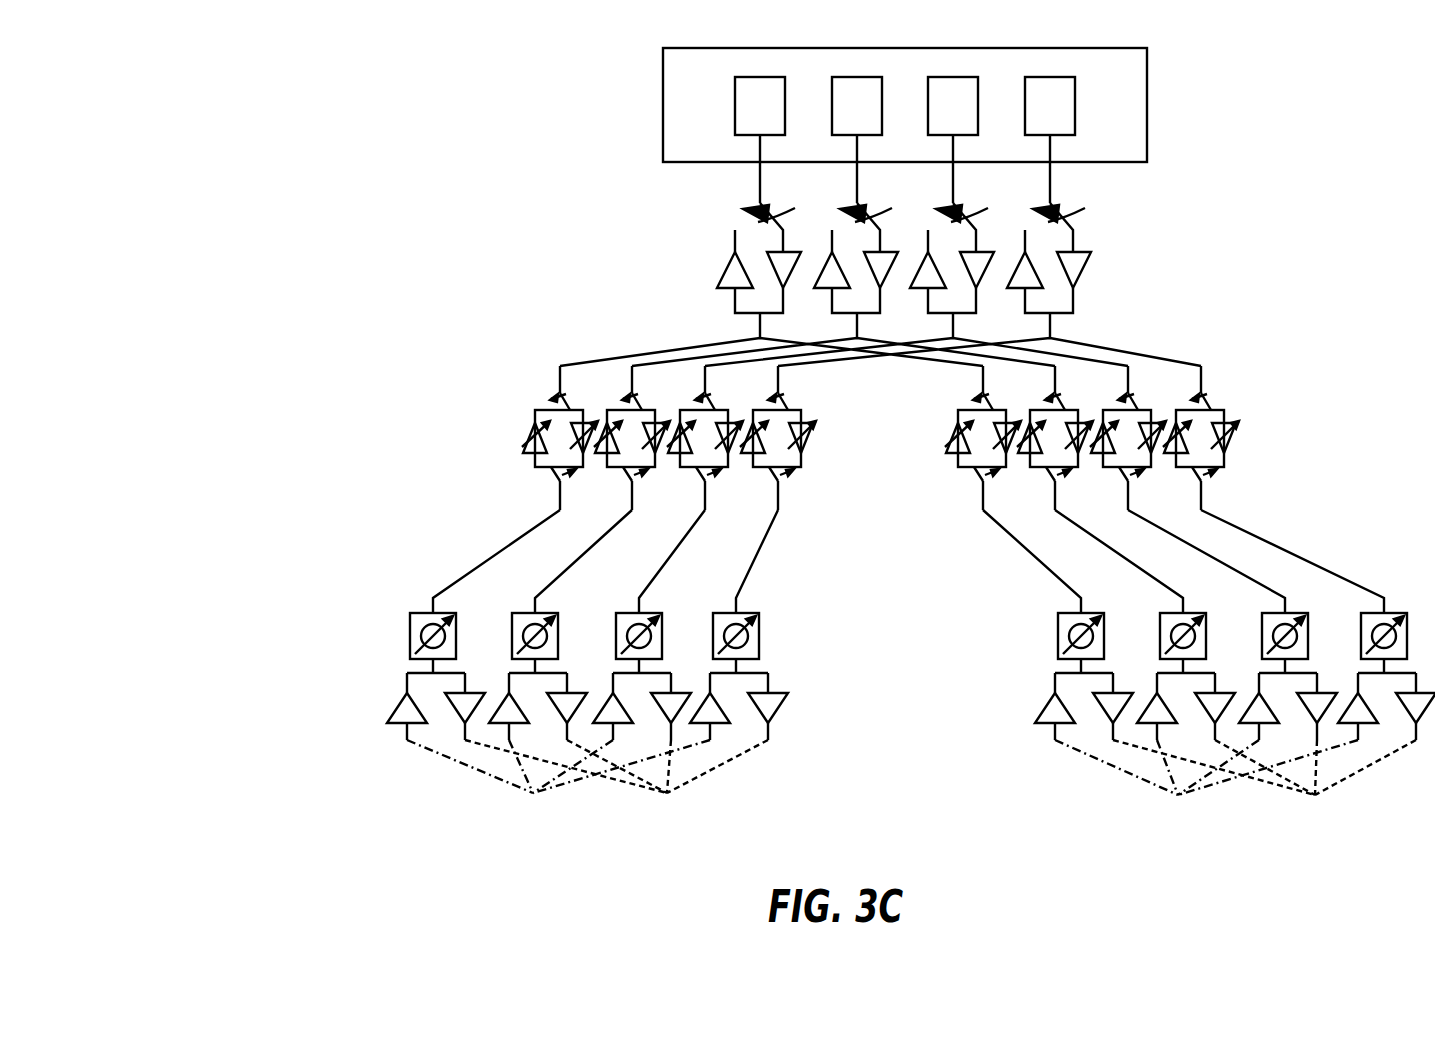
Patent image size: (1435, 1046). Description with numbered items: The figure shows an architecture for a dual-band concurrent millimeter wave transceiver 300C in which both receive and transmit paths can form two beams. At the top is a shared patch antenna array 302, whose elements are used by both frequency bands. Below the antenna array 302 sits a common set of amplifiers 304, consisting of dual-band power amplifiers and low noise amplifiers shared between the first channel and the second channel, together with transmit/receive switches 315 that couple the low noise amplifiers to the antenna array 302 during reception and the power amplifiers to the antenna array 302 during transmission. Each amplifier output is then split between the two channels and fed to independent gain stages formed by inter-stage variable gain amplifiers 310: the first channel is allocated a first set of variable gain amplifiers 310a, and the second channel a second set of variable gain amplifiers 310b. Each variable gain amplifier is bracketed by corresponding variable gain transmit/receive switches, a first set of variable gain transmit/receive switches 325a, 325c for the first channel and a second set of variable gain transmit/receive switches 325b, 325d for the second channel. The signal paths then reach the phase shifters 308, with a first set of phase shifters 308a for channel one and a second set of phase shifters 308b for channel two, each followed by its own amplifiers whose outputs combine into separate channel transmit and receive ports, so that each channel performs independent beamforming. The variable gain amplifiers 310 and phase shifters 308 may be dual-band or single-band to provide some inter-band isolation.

The dual-band concurrent millimeter wave transceiver 300C is at (564, 85).
The antenna array 302 is at (360, 162).
The common set of amplifiers 304 is at (651, 255).
The transmit/receive switches 315 is at (1102, 193).
The variable gain amplifiers 310 is at (717, 420).
The first set of variable gain amplifiers 310a is at (669, 438).
The second set of variable gain amplifiers 310b is at (1094, 438).
The first set of variable gain transmit/receive switches 325a is at (818, 382).
The second set of variable gain transmit/receive switches 325b is at (1248, 382).
The first set of variable gain transmit/receive switches 325c is at (818, 458).
The second set of variable gain transmit/receive switches 325d is at (1248, 458).
The phase shifters 308 is at (779, 681).
The first set of phase shifters 308a is at (780, 637).
The second set of phase shifters 308b is at (1180, 682).